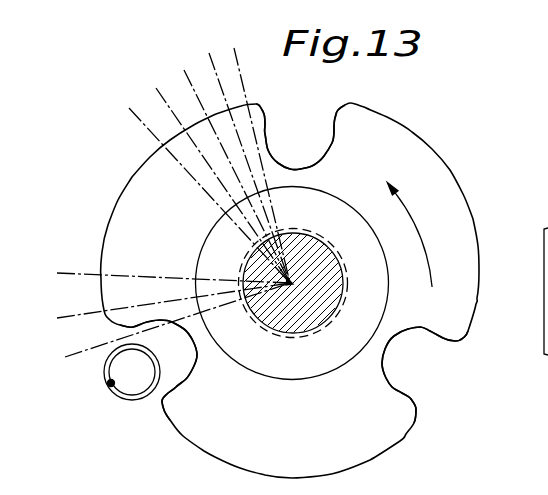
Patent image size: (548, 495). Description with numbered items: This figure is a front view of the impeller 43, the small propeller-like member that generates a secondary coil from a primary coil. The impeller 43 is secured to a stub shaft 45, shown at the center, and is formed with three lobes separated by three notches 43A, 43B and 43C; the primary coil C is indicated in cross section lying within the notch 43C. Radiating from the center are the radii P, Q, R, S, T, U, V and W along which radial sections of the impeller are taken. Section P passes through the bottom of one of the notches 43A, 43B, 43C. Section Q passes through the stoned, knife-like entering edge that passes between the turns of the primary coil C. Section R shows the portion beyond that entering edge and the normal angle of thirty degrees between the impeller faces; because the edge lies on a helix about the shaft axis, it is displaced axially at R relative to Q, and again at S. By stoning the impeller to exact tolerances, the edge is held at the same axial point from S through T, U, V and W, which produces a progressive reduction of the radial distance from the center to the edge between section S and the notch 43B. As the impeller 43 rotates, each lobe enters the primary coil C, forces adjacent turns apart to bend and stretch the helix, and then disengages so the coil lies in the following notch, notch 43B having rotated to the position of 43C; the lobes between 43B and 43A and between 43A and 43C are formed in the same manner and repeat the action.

The impeller 43 is at (481, 168).
The notch 43A is at (417, 333).
The notch 43B is at (297, 158).
The notch 43C is at (158, 370).
The stub shaft 45 is at (330, 270).
The primary coil C is at (127, 397).
The section line S is at (144, 94).
The section line T is at (173, 74).
The section line U is at (201, 58).
The section line V is at (225, 46).
The section line W is at (254, 43).
The section line R is at (57, 250).
The section line Q is at (57, 293).
The section line P is at (60, 332).